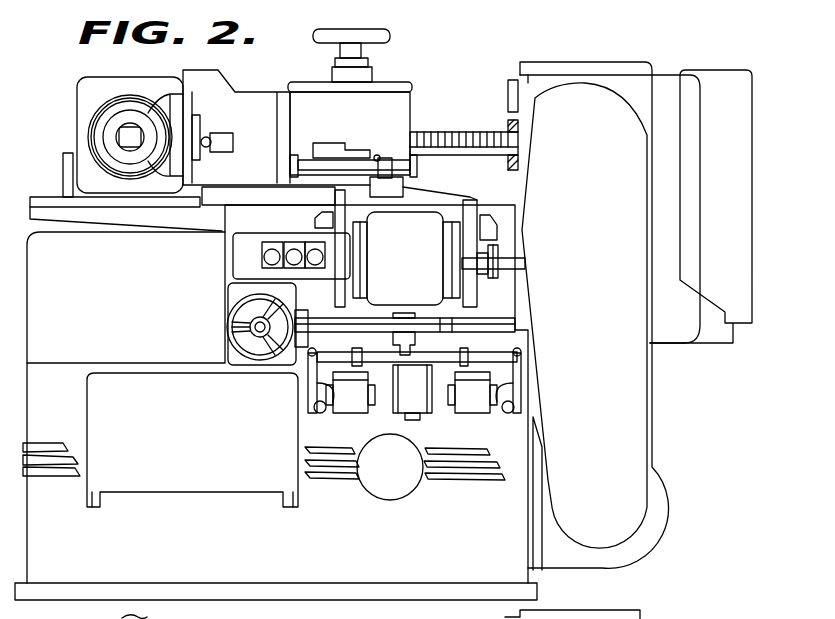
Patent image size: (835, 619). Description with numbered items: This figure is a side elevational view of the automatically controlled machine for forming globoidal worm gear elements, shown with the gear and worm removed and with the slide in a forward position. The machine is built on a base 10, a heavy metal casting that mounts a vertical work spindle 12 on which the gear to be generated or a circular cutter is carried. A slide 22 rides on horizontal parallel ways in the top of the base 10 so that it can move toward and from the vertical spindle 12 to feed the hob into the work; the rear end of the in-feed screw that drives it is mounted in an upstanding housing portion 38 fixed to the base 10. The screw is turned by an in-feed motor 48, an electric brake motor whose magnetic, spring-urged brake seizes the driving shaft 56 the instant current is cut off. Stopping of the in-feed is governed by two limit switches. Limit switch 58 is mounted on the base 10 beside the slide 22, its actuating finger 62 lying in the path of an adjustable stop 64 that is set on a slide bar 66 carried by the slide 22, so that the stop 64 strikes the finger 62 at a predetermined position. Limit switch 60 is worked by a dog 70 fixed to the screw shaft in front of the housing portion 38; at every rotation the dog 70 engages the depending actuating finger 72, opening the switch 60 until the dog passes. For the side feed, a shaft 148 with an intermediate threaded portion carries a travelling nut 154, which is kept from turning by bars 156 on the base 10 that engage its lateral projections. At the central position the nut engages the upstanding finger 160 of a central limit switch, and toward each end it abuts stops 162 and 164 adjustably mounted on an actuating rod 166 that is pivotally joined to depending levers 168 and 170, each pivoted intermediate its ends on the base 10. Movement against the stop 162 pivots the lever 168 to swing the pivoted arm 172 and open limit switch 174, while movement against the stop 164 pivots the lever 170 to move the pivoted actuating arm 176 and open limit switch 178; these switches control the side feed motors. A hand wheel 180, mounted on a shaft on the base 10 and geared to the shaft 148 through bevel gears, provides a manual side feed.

The base 10 is at (412, 572).
The vertical work spindle 12 is at (135, 205).
The slide 22 is at (258, 98).
The upstanding housing portion 38 is at (522, 70).
The in-feed motor 48 is at (415, 271).
The driving shaft 56 is at (425, 132).
The limit switch 58 is at (395, 192).
The limit switch 60 is at (508, 98).
The actuating finger 62 is at (373, 178).
The adjustable stop 64 is at (383, 158).
The slide bar 66 is at (342, 163).
The dog 70 is at (512, 163).
The depending actuating finger 72 is at (509, 122).
The shaft 148 is at (450, 318).
The travelling nut 154 is at (425, 322).
The bars 156 is at (342, 303).
The upstanding finger 160 is at (407, 366).
The stop 162 is at (400, 318).
The stop 164 is at (467, 356).
The actuating rod 166 is at (443, 362).
The lever 168 is at (312, 392).
The lever 170 is at (520, 395).
The pivoted arm 172 is at (328, 412).
The limit switch 174 is at (362, 404).
The pivoted actuating arm 176 is at (502, 408).
The limit switch 178 is at (484, 404).
The hand wheel 180 is at (270, 360).